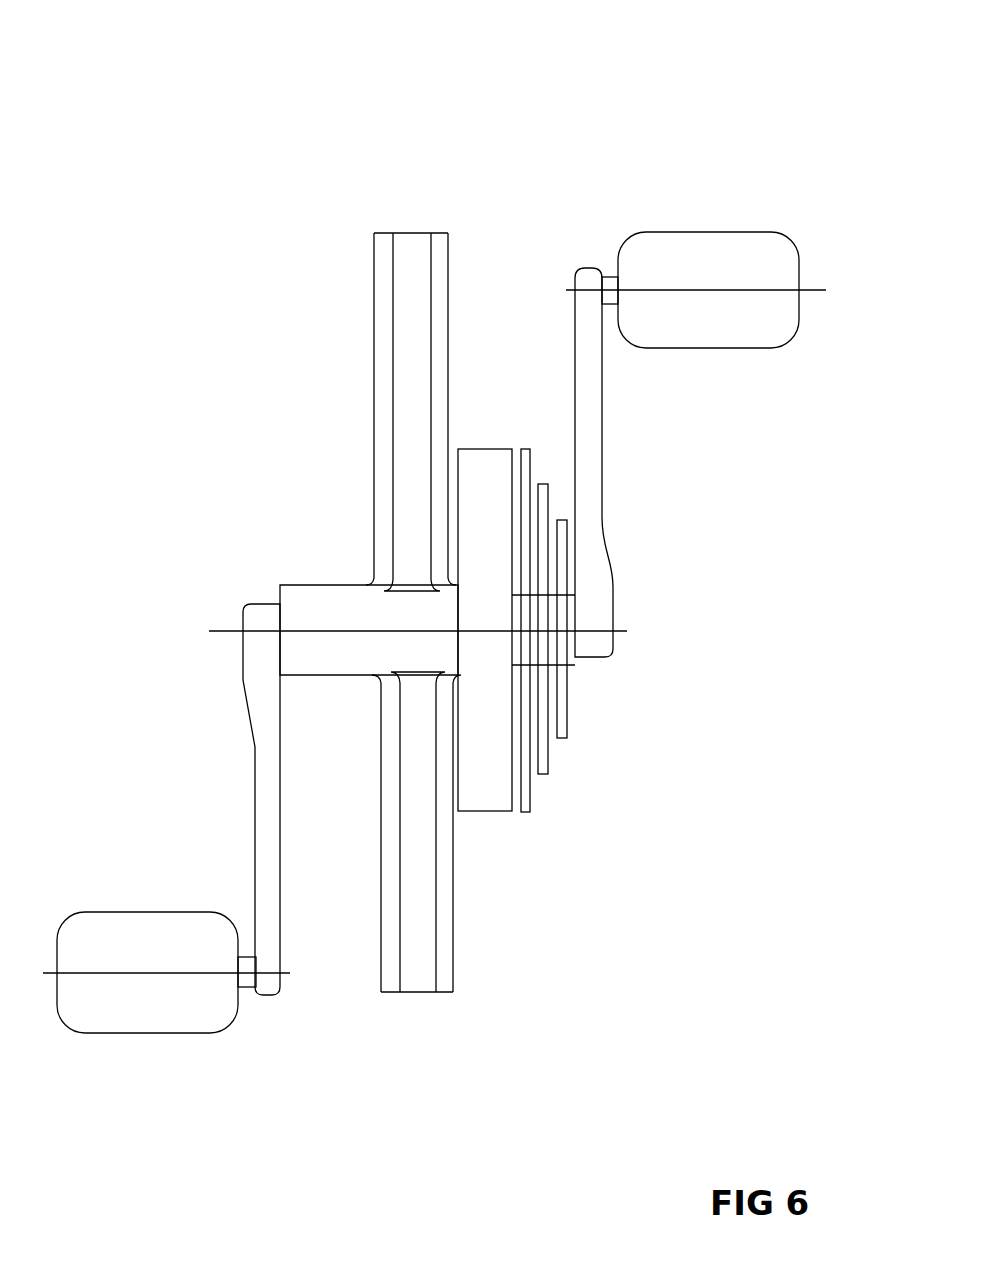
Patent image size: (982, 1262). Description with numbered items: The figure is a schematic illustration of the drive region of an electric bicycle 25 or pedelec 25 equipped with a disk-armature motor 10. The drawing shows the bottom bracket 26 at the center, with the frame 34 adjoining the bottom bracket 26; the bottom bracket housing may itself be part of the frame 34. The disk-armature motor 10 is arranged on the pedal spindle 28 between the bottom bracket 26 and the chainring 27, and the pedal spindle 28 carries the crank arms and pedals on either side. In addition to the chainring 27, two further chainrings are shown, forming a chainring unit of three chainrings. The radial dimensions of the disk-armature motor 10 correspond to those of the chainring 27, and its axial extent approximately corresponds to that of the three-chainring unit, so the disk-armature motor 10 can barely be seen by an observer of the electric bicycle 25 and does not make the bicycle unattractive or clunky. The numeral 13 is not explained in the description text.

The electric bicycle 25 is at (548, 102).
The crank axis 13 is at (222, 633).
The frame 34 is at (400, 341).
The bottom bracket 26 is at (338, 608).
The disk-armature motor 10 is at (488, 800).
The chainring 27 is at (533, 802).
The pedal spindle 28 is at (592, 643).